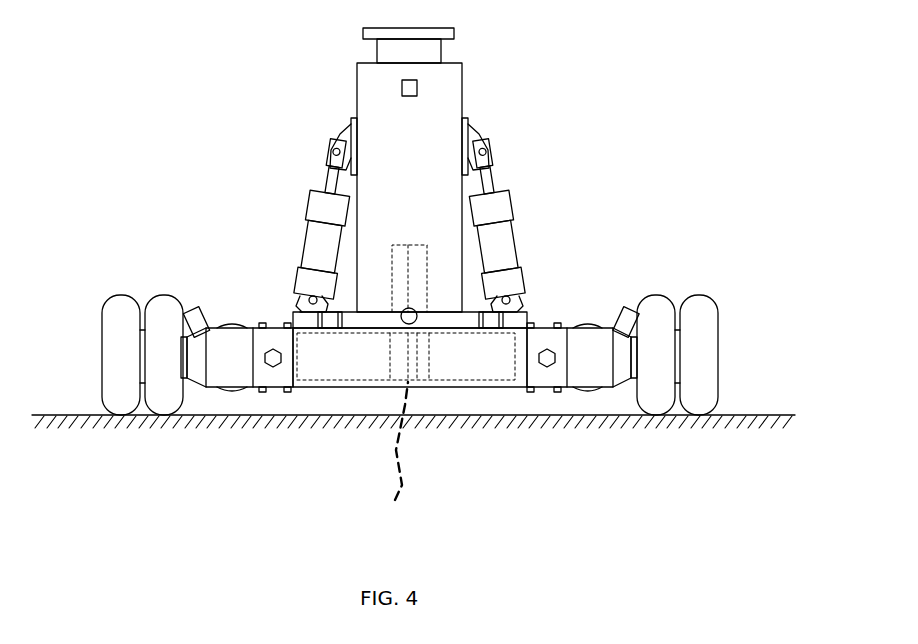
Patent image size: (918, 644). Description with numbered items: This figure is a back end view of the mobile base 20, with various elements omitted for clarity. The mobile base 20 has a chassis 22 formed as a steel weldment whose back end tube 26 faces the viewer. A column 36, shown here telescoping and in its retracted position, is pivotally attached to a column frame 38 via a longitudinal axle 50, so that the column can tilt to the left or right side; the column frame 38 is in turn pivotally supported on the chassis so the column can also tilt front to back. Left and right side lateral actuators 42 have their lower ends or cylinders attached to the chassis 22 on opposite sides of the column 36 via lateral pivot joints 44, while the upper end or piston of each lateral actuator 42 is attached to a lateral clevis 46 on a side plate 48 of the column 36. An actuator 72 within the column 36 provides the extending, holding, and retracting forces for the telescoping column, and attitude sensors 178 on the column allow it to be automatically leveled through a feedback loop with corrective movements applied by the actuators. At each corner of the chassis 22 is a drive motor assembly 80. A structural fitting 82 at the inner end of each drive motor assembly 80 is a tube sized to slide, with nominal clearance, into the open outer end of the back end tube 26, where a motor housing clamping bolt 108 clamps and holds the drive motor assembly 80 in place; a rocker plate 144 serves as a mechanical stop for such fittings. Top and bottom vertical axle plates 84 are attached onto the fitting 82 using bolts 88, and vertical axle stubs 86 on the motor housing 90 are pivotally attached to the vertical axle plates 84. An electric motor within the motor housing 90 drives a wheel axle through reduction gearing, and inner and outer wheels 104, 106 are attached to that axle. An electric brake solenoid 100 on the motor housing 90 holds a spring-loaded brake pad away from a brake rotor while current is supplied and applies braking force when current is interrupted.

The mobile base 20 is at (574, 163).
The chassis 22 is at (593, 258).
The back end tube 26 is at (460, 368).
The column 36 is at (448, 105).
The column frame 38 is at (460, 318).
The lateral actuators 42 is at (310, 240).
The lateral pivot joints 44 is at (307, 295).
The lateral clevis 46 is at (330, 150).
The side plate 48 is at (350, 125).
The longitudinal axle 50 is at (405, 306).
The actuator 72 is at (440, 250).
The drive motor assembly 80 is at (593, 403).
The structural fitting 82 is at (513, 337).
The vertical axle plates 84 is at (255, 324).
The vertical axle stubs 86 is at (220, 322).
The bolts 88 is at (266, 392).
The motor housing 90 is at (212, 332).
The electric brake solenoid 100 is at (626, 308).
The inner wheel 104 is at (662, 405).
The outer wheel 106 is at (698, 405).
The motor housing clamping bolt 108 is at (282, 357).
The rocker plate 144 is at (379, 451).
The attitude sensors 178 is at (418, 88).